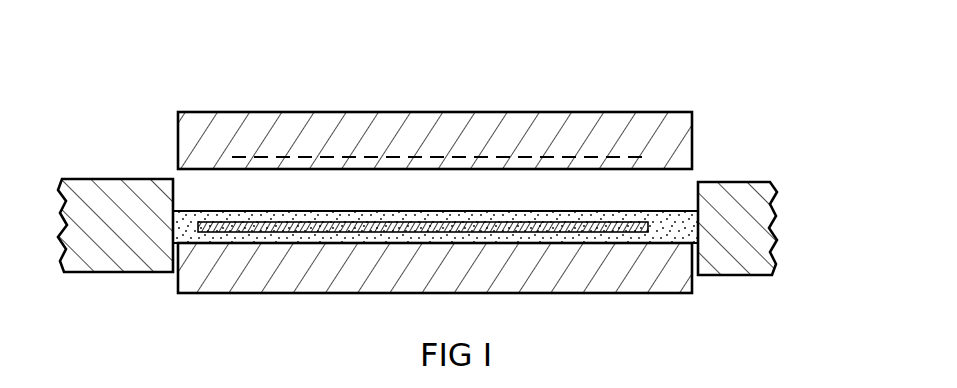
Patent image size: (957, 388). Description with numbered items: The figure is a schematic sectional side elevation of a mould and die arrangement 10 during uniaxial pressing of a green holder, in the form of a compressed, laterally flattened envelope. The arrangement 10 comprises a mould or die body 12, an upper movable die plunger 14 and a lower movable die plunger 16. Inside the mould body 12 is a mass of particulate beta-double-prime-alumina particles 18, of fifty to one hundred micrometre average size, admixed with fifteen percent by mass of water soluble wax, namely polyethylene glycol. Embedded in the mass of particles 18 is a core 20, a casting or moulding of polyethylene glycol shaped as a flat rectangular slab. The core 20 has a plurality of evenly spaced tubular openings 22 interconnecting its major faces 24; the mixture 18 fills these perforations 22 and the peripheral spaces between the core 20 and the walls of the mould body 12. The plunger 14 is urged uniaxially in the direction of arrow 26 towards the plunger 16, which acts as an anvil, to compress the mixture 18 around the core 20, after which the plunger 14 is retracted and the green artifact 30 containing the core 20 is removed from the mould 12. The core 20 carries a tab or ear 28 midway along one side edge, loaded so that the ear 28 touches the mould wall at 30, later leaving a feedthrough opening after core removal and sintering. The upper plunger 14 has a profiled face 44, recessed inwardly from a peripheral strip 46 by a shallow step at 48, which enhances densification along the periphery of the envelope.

The mould and die arrangement 10 is at (702, 64).
The mould or die body 12 is at (147, 254).
The movable die plunger 14 is at (572, 126).
The movable die plunger 16 is at (467, 268).
The mass of particulate beta''-alumina particles 18 is at (625, 212).
The core 20 is at (591, 238).
The tubular openings 22 is at (445, 221).
The major faces 24 is at (477, 204).
The arrow 26 is at (333, 22).
The tab or ear 28 is at (676, 215).
The green artifact 30 is at (714, 234).
The profiled face 44 is at (465, 140).
The peripheral strip 46 is at (656, 182).
The shallow step 48 is at (664, 150).